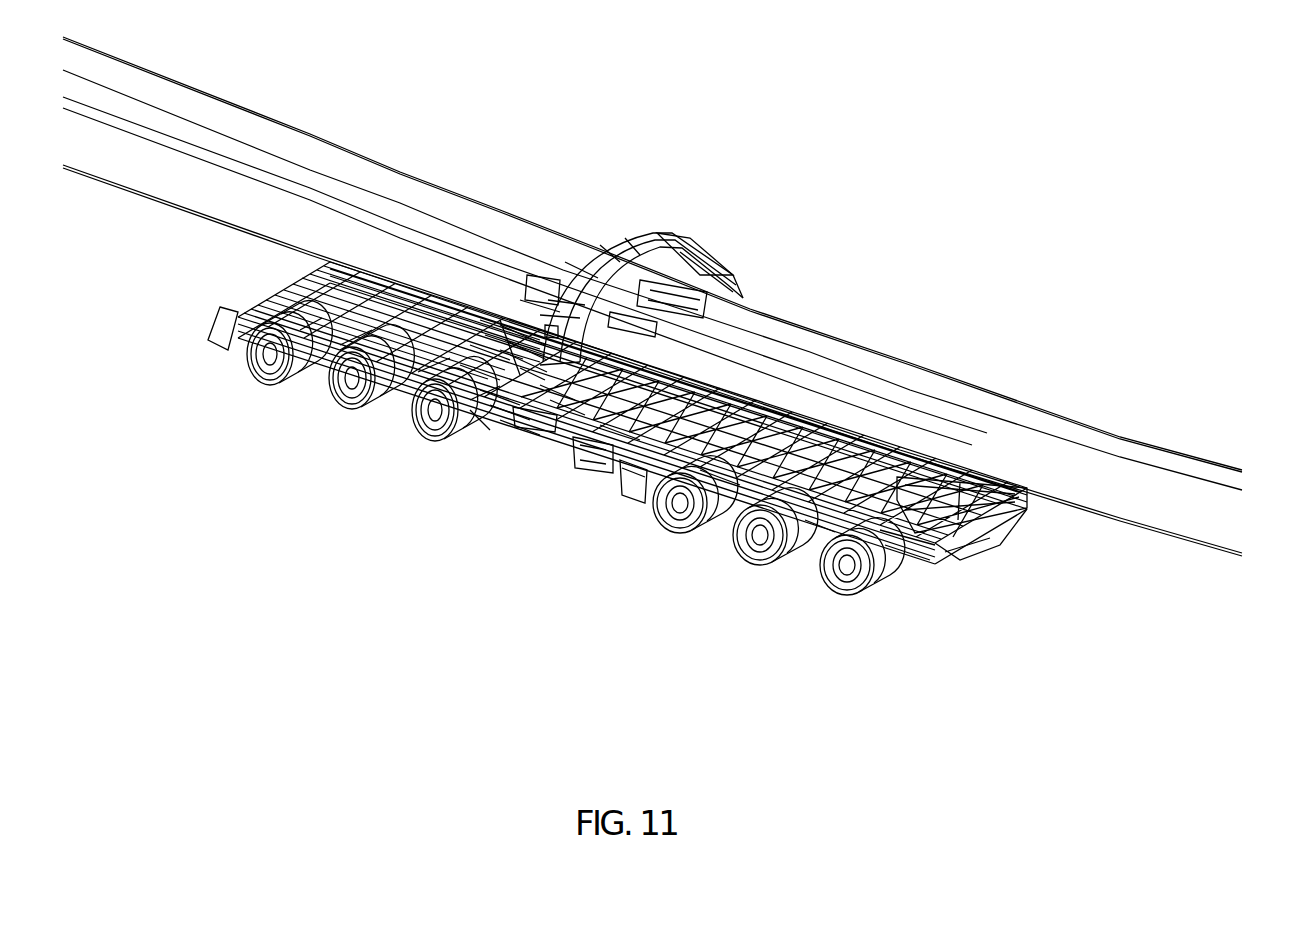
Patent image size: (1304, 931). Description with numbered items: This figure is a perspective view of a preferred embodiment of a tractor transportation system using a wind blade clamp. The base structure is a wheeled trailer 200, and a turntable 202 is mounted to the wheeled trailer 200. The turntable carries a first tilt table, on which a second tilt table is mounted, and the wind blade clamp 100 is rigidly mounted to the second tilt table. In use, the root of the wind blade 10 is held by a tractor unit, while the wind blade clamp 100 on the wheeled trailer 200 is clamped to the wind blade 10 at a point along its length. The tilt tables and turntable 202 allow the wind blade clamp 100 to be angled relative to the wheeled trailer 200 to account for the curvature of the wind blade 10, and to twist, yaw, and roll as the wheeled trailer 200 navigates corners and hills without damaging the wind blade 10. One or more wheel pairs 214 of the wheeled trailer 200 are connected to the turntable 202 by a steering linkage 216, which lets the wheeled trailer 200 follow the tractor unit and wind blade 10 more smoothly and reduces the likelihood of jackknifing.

The wind blade 10 is at (502, 253).
The wind blade clamp 100 is at (742, 298).
The wheeled trailer 200 is at (523, 425).
The turntable 202 is at (613, 480).
The wheel pairs 214 is at (762, 570).
The steering linkage 216 is at (690, 537).